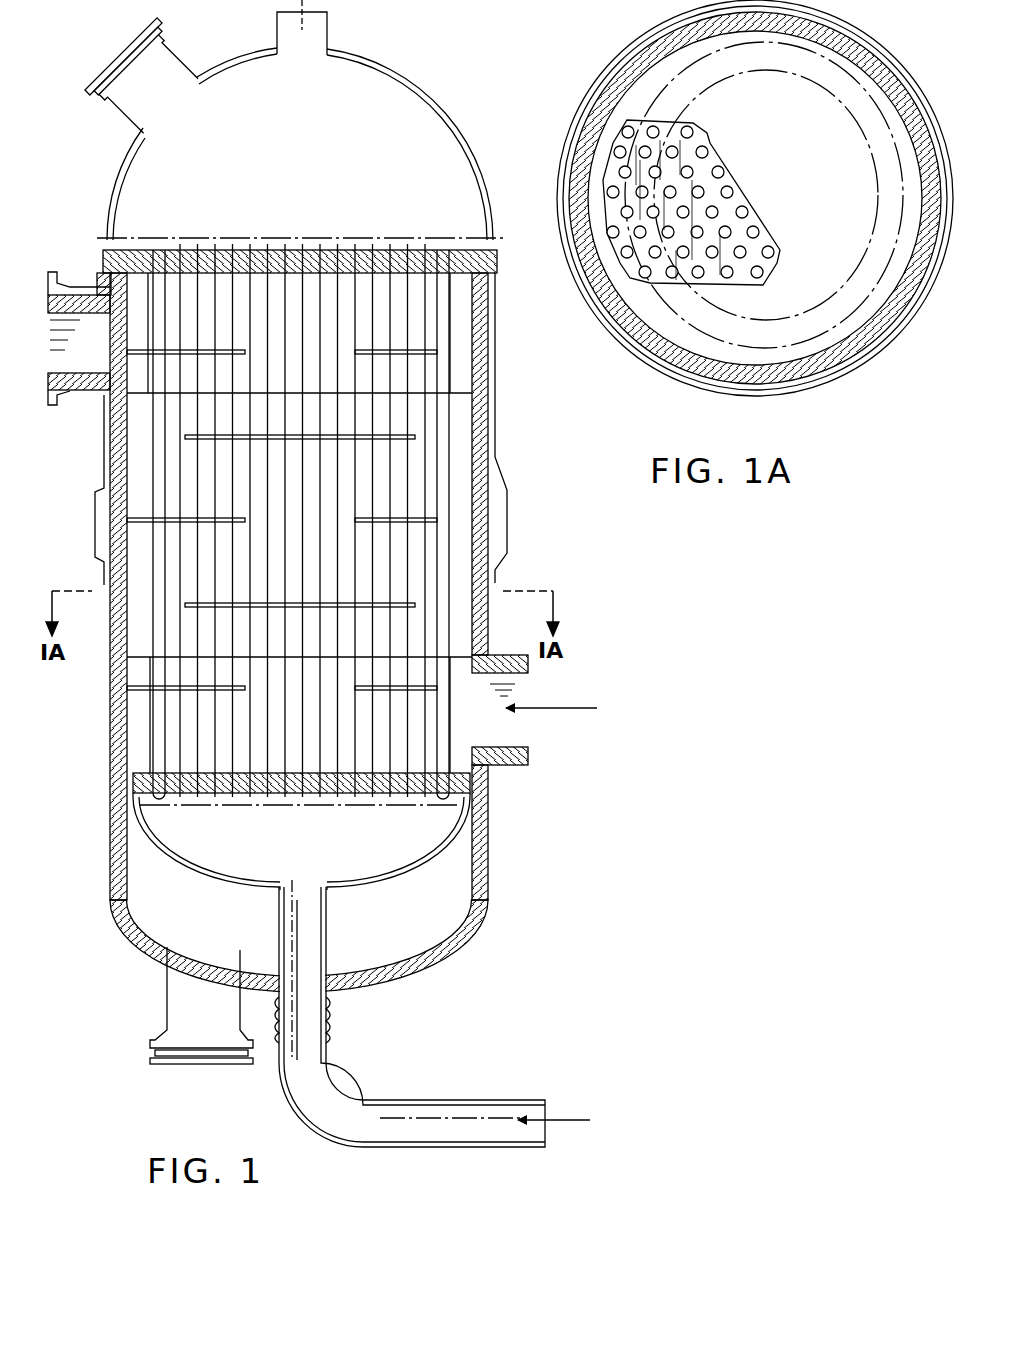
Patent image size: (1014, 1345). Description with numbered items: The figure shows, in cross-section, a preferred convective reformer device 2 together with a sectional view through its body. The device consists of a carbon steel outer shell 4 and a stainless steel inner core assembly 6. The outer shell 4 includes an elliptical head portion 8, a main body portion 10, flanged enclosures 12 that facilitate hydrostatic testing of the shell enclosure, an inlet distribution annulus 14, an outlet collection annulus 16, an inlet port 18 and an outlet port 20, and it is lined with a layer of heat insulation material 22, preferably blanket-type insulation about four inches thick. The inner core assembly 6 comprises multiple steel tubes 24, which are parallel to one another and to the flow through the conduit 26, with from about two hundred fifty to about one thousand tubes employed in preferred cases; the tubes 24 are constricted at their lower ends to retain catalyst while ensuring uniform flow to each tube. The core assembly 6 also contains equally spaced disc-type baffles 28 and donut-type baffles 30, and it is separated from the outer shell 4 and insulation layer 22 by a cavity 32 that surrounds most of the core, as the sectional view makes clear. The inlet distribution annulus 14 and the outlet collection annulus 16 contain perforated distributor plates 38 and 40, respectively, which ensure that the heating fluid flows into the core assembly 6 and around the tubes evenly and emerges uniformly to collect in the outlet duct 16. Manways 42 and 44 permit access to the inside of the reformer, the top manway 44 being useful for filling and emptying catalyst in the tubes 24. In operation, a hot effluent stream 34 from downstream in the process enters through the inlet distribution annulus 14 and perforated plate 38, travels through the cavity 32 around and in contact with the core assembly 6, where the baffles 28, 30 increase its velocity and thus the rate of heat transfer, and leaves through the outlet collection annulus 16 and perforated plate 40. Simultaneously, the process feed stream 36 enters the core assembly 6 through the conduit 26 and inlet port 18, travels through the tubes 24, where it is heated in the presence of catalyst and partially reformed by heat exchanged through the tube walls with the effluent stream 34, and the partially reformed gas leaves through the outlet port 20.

In FIG. 1, the convective reformer device 2 is at (497, 354).
In FIG. 1A, the convective reformer device 2 is at (894, 47).
In FIG. 1, the outer shell 4 is at (490, 846).
In FIG. 1A, the outer shell 4 is at (915, 311).
In FIG. 1, the inner core assembly 6 is at (395, 875).
In FIG. 1, the elliptical head portion 8 is at (112, 930).
In FIG. 1, the main body portion 10 is at (110, 692).
In FIG. 1, the flanged enclosures 12 is at (98, 547).
In FIG. 1, the inlet distribution annulus 14 is at (530, 754).
In FIG. 1, the outlet collection annulus 16 is at (47, 395).
In FIG. 1, the inlet port 18 is at (307, 1017).
In FIG. 1, the outlet port 20 is at (313, 27).
In FIG. 1, the heat insulation material 22 is at (440, 960).
In FIG. 1A, the heat insulation material 22 is at (905, 85).
In FIG. 1, the steel tubes 24 is at (210, 712).
In FIG. 1A, the steel tubes 24 is at (682, 170).
In FIG. 1, the conduit 26 is at (282, 1080).
In FIG. 1, the disc-type baffles 28 is at (415, 434).
In FIG. 1, the donut-type baffles 30 is at (170, 521).
In FIG. 1, the cavity 32 is at (128, 460).
In FIG. 1A, the cavity 32 is at (830, 345).
In FIG. 1, the hot effluent stream 34 is at (548, 708).
In FIG. 1, the process feed stream 36 is at (587, 1120).
In FIG. 1, the perforated distributor plate 38 is at (455, 705).
In FIG. 1, the perforated distributor plate 40 is at (152, 335).
In FIG. 1, the manway 42 is at (215, 1057).
In FIG. 1, the top manway 44 is at (167, 63).